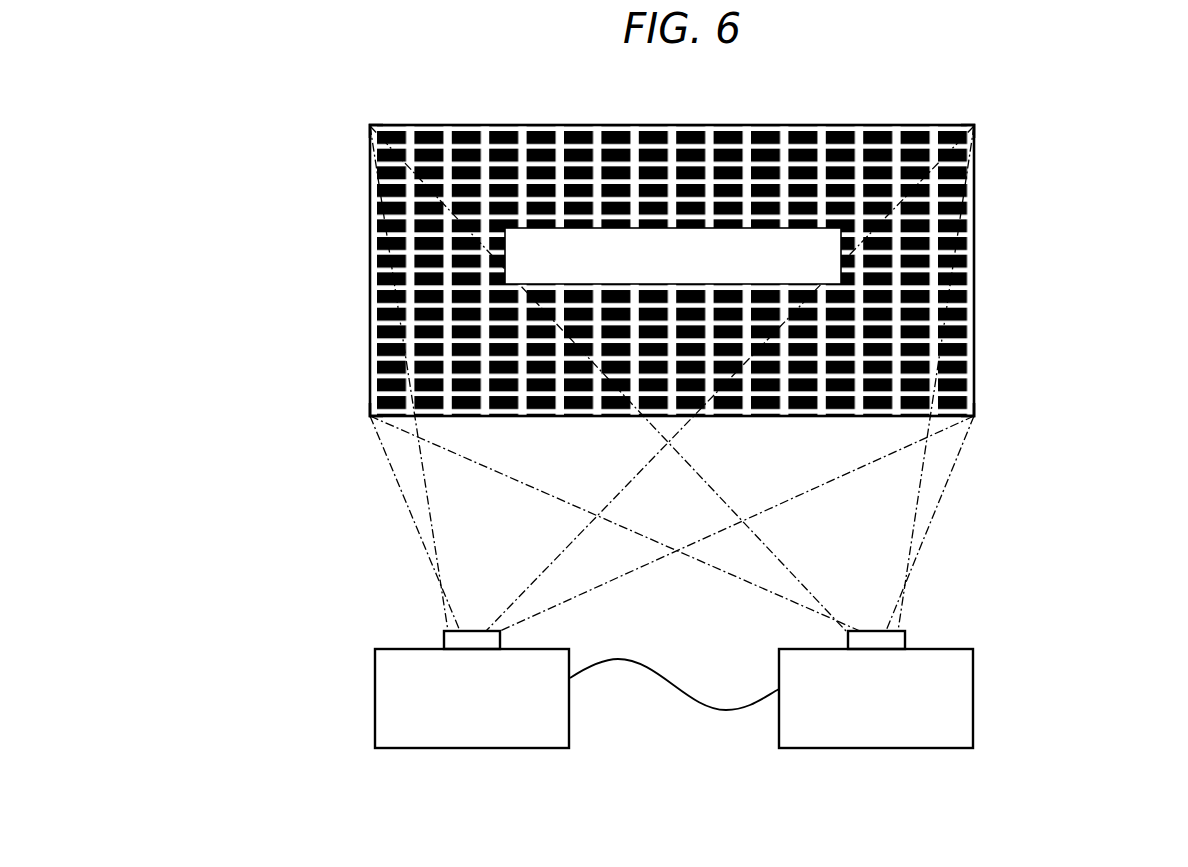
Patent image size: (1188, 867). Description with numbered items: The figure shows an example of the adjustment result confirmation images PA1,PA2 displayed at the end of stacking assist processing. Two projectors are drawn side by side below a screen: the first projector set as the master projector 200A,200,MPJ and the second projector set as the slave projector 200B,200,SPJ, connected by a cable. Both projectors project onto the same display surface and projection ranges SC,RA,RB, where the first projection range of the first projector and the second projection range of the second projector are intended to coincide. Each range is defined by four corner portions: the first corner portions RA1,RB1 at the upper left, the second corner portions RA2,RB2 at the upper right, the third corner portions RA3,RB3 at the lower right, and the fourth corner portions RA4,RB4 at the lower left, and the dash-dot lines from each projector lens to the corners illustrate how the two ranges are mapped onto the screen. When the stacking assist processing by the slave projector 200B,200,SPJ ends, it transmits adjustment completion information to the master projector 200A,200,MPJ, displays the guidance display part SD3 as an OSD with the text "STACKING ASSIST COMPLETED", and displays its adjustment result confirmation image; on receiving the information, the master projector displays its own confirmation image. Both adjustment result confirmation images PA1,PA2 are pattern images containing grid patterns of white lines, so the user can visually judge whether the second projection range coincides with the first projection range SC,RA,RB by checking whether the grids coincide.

The projection surface / first projection range / second projection range SC,RA,RB is at (362, 249).
The first corner portion RA1,RB1 is at (362, 119).
The second corner portion RA2,RB2 is at (967, 117).
The third corner portion RA3,RB3 is at (967, 409).
The fourth corner portion RA4,RB4 is at (362, 408).
The guidance display part SD3 is at (697, 222).
The adjustment result confirmation images PA1,PA2 is at (988, 223).
The second projector / slave projector 200B,200,SPJ is at (367, 688).
The first projector / master projector 200A,200,MPJ is at (965, 683).